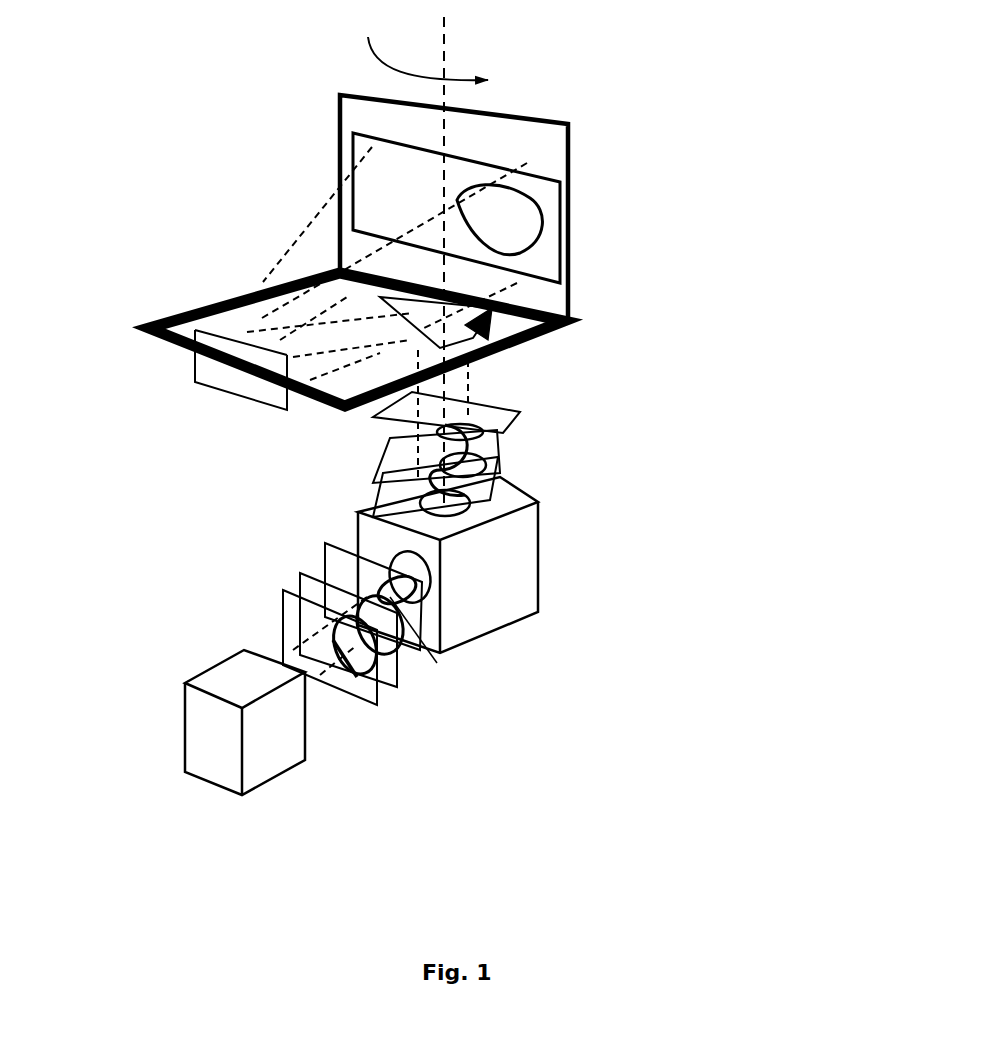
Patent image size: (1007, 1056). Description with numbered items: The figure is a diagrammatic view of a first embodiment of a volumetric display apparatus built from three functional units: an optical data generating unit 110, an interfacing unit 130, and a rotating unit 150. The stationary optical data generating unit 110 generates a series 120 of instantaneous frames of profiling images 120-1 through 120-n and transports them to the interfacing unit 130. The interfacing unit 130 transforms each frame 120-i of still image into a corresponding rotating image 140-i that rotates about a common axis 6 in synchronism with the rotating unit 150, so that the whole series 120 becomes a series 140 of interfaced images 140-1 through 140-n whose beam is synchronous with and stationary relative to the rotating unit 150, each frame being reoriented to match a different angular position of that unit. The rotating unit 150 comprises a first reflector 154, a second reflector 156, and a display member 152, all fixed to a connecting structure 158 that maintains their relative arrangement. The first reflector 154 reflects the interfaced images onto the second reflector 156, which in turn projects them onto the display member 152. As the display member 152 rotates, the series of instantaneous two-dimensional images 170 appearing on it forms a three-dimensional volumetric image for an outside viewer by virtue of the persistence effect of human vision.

The common axis 6 is at (450, 62).
The optical data generating unit 110 is at (300, 782).
The series of frames of images 120 is at (465, 699).
The first frame of profiling image 120-1 is at (437, 663).
The frame of still image 120-i is at (408, 687).
The last frame of profiling image 120-n is at (386, 695).
The interfacing unit 130 is at (548, 598).
The series of interfaced images 140 is at (587, 456).
The first interfaced image 140-1 is at (483, 413).
The rotating image 140-i is at (503, 447).
The last interfaced image 140-n is at (511, 487).
The rotating unit 150 is at (460, 274).
The display member 152 is at (572, 262).
The first reflector 154 is at (520, 343).
The second reflector 156 is at (222, 388).
The connecting structure 158 is at (222, 293).
The instantaneous 2D images 170 is at (364, 157).